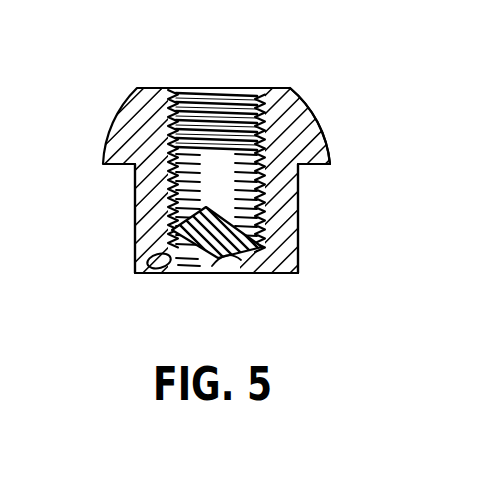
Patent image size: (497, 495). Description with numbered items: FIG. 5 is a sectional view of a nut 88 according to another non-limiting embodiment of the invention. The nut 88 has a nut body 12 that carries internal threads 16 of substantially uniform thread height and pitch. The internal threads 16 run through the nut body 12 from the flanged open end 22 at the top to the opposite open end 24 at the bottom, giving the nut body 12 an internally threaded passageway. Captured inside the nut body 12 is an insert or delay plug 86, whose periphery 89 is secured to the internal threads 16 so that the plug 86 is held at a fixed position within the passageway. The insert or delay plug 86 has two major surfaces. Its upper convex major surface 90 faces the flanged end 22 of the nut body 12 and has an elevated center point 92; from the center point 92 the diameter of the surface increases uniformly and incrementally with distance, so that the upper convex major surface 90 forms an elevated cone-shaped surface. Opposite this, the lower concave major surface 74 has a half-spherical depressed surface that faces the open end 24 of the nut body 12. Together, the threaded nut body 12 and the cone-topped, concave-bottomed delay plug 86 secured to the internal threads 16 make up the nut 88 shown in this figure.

The nut body 12 is at (297, 76).
The internal threads 16 is at (210, 100).
The flanged open end 22 is at (320, 123).
The opposite open end 24 is at (283, 275).
The lower concave major surface 74 is at (233, 276).
The insert or delay plug 86 is at (208, 258).
The nut 88 is at (128, 79).
The periphery 89 is at (137, 276).
The upper convex major surface 90 is at (264, 214).
The elevated center point 92 is at (214, 206).